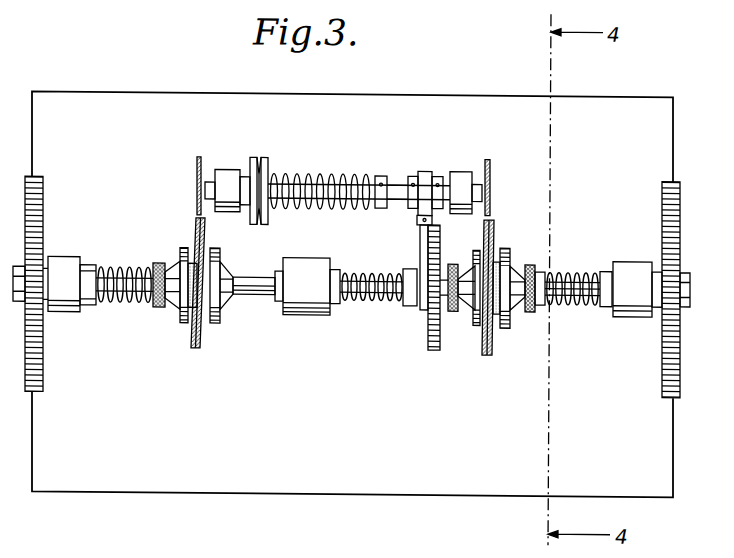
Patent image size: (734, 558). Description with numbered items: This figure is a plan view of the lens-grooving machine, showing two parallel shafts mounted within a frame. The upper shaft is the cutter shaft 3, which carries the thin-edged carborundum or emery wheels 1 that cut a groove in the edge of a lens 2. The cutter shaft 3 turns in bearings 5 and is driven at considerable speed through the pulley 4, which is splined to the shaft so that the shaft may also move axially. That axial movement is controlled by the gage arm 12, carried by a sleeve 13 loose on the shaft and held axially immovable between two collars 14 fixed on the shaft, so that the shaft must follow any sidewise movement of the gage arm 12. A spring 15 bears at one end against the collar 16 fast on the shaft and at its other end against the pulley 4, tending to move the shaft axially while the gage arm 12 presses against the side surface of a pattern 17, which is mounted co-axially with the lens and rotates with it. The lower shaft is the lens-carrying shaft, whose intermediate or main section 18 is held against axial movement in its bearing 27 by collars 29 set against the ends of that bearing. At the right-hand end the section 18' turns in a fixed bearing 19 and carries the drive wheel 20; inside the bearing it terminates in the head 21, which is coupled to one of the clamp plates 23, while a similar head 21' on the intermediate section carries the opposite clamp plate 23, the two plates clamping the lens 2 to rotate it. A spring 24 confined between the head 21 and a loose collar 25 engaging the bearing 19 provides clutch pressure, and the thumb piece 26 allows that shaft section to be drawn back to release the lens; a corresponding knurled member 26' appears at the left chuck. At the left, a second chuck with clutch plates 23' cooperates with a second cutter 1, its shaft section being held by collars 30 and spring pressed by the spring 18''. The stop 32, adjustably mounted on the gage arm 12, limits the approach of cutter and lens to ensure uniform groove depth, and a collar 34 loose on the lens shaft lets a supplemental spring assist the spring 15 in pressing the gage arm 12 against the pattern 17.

The carborundum or emery wheel 1 is at (199, 163).
The lens 2 is at (207, 235).
The cutter shaft 3 is at (395, 184).
The pulley 4 is at (258, 166).
The bearings 5 is at (224, 173).
The gage arm 12 is at (424, 252).
The sleeve 13 is at (424, 176).
The collars 14 is at (410, 203).
The spring 15 is at (298, 190).
The collar 16 is at (379, 172).
The pattern 17 is at (435, 348).
The lens-carrying shaft 18 is at (307, 265).
The shaft section 18' is at (577, 270).
The spring 18'' is at (124, 307).
The fixed bearing 19 is at (630, 264).
The drive wheel 20 is at (672, 236).
The head 21 is at (536, 276).
The head 21' is at (464, 306).
The clamp plates 23 is at (509, 302).
The clutch plates 23' is at (197, 313).
The spring 24 is at (573, 298).
The loose collar 25 is at (610, 296).
The thumb piece 26 is at (528, 309).
The knurled nut 26' is at (459, 317).
The bearing 27 is at (305, 261).
The collars 29 is at (332, 267).
The collars 30 is at (46, 271).
The stop 32 is at (420, 219).
The collar 34 is at (411, 302).